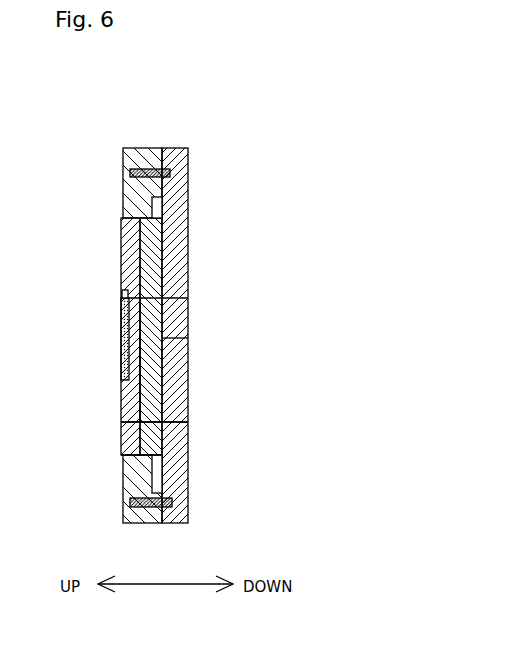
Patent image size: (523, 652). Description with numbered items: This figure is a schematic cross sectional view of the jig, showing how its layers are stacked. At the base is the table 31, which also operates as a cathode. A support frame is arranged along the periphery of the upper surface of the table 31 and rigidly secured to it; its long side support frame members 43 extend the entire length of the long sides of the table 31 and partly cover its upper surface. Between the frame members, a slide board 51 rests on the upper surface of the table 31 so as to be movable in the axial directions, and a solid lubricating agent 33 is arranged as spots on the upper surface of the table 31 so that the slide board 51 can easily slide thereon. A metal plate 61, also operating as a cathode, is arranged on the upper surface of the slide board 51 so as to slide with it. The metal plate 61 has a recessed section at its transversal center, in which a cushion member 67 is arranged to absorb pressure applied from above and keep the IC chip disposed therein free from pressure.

The table 31 is at (190, 242).
The long side support frame member 43 is at (142, 148).
The slide board 51 is at (163, 229).
The cushion member 67 is at (130, 298).
The solid lubricating agent 33 is at (188, 338).
The metal plate 61 is at (188, 422).